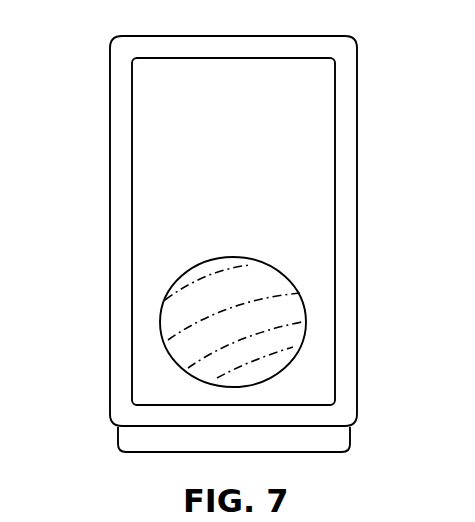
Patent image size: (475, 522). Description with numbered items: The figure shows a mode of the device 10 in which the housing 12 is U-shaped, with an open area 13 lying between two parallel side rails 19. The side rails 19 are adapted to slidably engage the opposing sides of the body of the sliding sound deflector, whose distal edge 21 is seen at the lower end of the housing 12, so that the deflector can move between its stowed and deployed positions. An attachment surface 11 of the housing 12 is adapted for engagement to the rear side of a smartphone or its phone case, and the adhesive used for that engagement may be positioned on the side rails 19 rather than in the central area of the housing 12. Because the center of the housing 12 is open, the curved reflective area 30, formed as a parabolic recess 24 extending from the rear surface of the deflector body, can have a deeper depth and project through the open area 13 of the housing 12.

The device 10 is at (370, 89).
The attachment surface 11 is at (343, 135).
The housing 12 is at (357, 58).
The open area 13 is at (297, 170).
The side rails 19 is at (342, 302).
The distal edge 21 is at (305, 455).
The parabolic recess 24 is at (210, 295).
The curved reflective area 30 is at (244, 338).